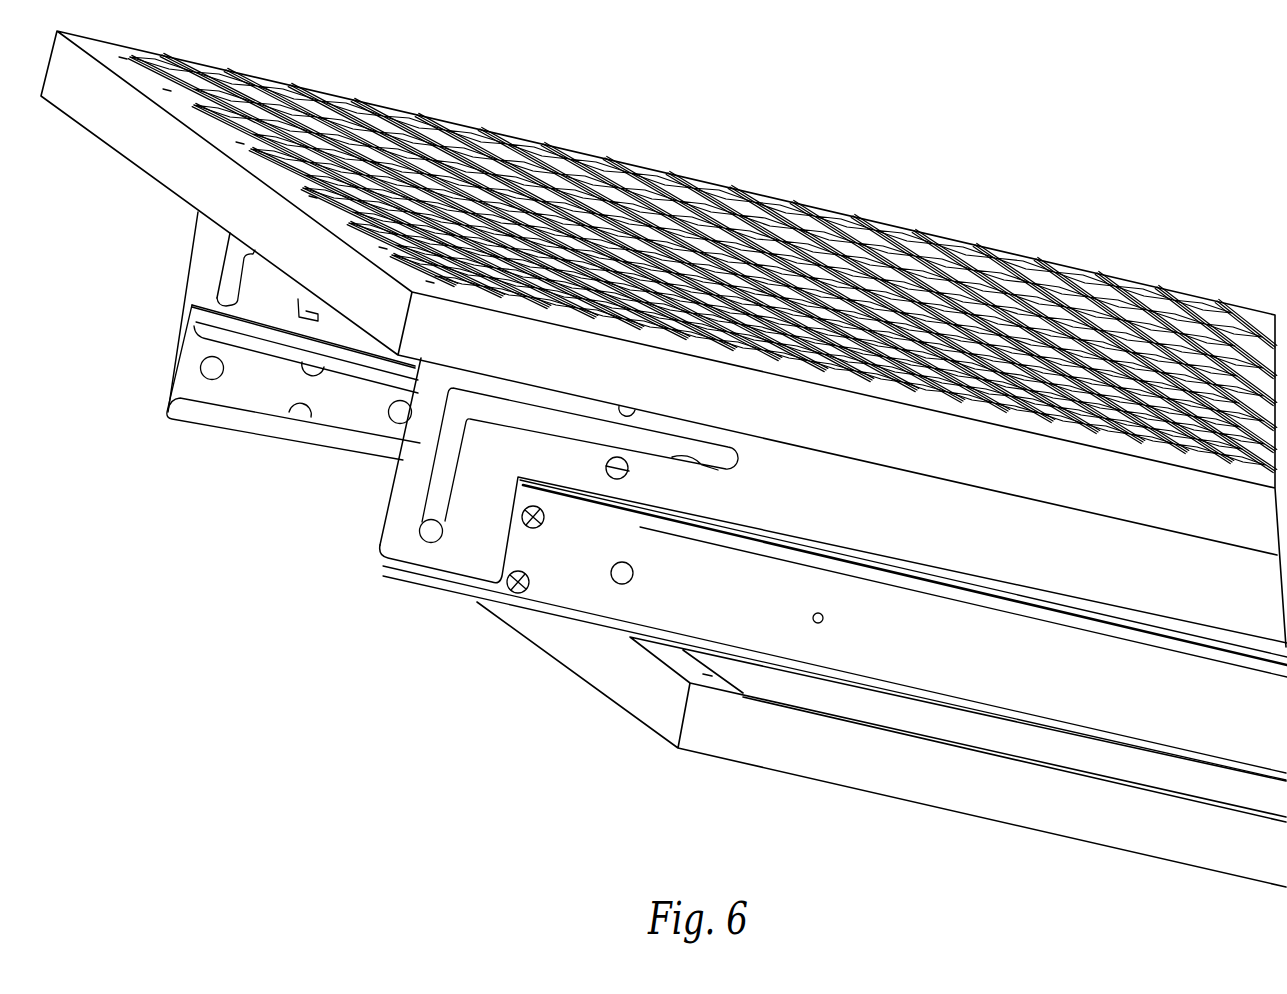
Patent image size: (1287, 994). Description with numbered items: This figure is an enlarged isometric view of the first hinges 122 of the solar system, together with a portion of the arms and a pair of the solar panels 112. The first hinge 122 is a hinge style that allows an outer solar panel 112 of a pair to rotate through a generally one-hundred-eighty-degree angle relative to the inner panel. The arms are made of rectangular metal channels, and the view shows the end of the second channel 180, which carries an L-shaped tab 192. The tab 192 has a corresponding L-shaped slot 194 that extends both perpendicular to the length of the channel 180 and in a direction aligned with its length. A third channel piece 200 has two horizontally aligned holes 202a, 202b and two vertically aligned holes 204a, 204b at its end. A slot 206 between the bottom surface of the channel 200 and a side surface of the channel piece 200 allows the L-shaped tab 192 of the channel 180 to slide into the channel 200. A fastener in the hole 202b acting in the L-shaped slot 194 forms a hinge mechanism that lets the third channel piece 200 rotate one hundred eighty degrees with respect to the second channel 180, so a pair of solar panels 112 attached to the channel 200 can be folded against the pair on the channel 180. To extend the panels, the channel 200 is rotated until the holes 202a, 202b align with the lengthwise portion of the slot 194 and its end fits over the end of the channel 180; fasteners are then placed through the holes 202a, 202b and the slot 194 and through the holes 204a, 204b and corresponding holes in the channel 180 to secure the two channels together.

The solar panel 112 is at (765, 192).
The first hinge 122 is at (160, 433).
The second channel 180 is at (190, 220).
The L-shaped tab 192 is at (187, 258).
The L-shaped slot 194 is at (230, 300).
The third channel piece 200 is at (212, 438).
The horizontally aligned hole 202a is at (628, 572).
The horizontally aligned hole 202b is at (428, 523).
The vertically aligned hole 204a is at (545, 524).
The vertically aligned hole 204b is at (517, 580).
The slot 206 is at (193, 392).